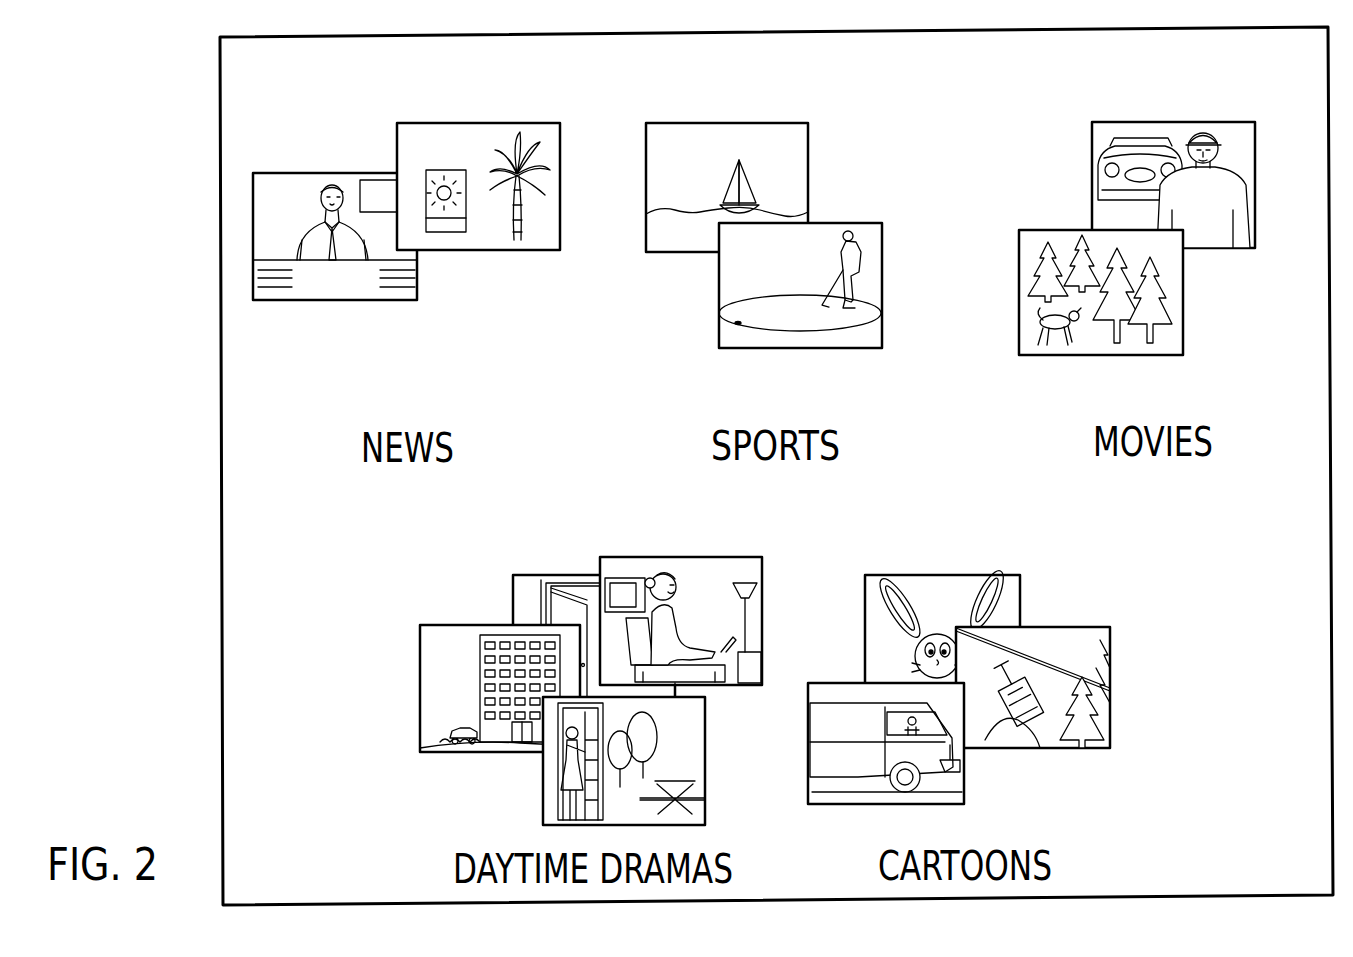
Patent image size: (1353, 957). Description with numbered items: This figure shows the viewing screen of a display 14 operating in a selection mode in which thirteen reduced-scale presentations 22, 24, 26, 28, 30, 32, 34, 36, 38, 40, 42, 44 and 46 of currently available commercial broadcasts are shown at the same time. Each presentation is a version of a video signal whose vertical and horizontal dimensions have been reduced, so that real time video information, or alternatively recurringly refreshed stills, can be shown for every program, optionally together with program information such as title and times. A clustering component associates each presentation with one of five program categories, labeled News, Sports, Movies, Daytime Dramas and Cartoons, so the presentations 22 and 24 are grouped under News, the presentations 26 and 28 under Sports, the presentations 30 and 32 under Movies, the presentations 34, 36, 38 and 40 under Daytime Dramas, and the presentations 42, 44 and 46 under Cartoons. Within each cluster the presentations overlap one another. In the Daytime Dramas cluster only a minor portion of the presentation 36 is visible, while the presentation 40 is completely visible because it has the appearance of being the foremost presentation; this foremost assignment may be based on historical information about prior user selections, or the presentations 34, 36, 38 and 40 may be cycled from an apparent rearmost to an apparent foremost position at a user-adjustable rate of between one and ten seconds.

The display 14 is at (233, 532).
The reduced-scale presentation 22 is at (302, 182).
The reduced-scale presentation 24 is at (545, 130).
The reduced-scale presentation 26 is at (788, 132).
The reduced-scale presentation 28 is at (865, 232).
The reduced-scale presentation 30 is at (1107, 130).
The reduced-scale presentation 32 is at (1033, 238).
The reduced-scale presentation 34 is at (435, 633).
The reduced-scale presentation 36 is at (527, 582).
The reduced-scale presentation 38 is at (613, 563).
The reduced-scale presentation 40 is at (550, 807).
The reduced-scale presentation 42 is at (1008, 580).
The reduced-scale presentation 44 is at (1068, 637).
The reduced-scale presentation 46 is at (960, 788).